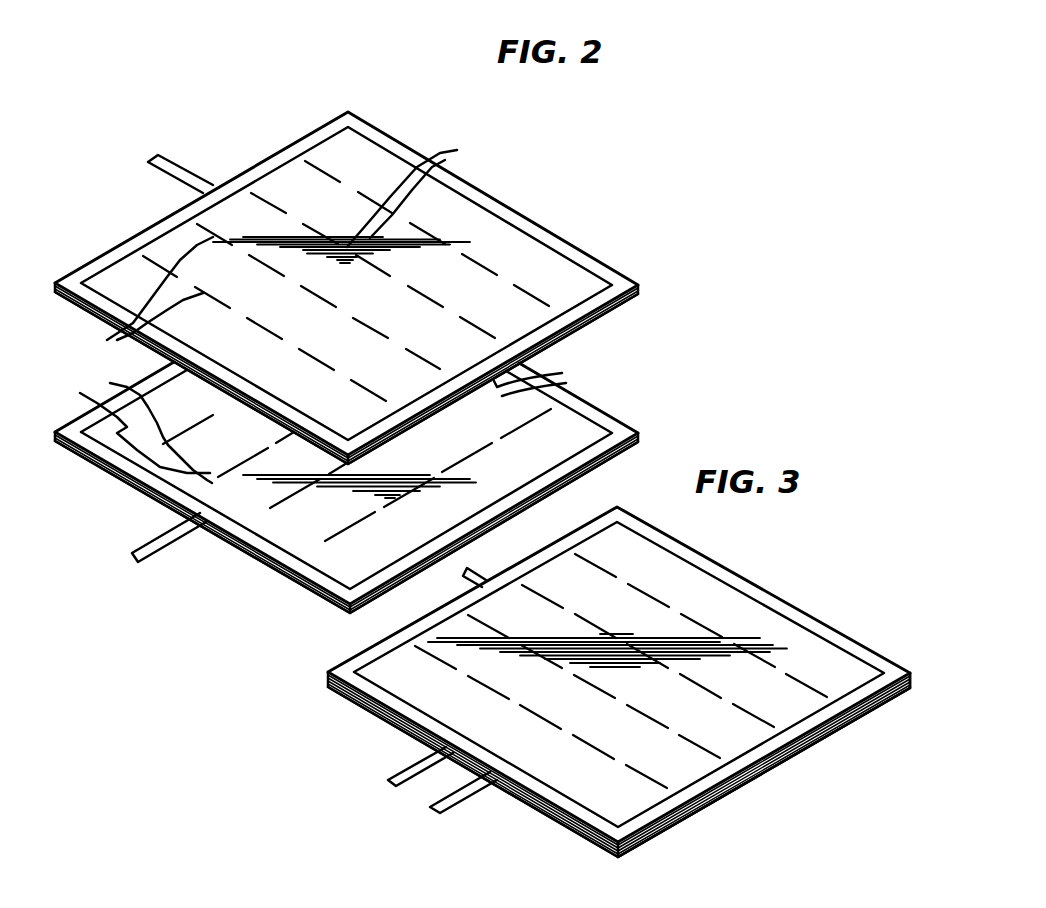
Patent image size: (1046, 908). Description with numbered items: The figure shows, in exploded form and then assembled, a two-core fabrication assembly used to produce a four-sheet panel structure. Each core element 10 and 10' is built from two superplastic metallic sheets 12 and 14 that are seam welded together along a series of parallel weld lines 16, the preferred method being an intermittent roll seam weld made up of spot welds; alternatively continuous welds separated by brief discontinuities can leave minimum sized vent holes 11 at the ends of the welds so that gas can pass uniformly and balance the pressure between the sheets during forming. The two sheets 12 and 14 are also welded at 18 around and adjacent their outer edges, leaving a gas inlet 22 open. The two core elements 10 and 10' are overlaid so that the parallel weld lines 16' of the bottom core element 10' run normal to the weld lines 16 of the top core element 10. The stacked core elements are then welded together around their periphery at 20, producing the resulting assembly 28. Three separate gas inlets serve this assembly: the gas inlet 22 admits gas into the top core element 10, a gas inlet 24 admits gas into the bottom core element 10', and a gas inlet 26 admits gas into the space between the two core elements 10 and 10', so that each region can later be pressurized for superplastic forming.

In FIG. 2, the core element 10 is at (346, 268).
In FIG. 3, the core element 10 is at (589, 682).
In FIG. 2, the core element 10' is at (346, 514).
In FIG. 3, the core element 10' is at (764, 765).
In FIG. 2, the vent holes 11 is at (190, 229).
In FIG. 2, the superplastic metallic sheet 12 is at (548, 263).
In FIG. 3, the superplastic metallic sheet 12 is at (393, 723).
In FIG. 2, the superplastic metallic sheet 14 is at (637, 293).
In FIG. 3, the superplastic metallic sheet 14 is at (420, 740).
In FIG. 2, the weld lines 16 is at (278, 250).
In FIG. 2, the weld lines 16' is at (334, 418).
In FIG. 2, the edge weld 18 is at (512, 215).
In FIG. 3, the peripheral weld 20 is at (767, 767).
In FIG. 2, the gas inlet 22 is at (208, 186).
In FIG. 3, the gas inlet 22 is at (477, 574).
In FIG. 2, the gas inlet 24 is at (133, 556).
In FIG. 3, the gas inlet 24 is at (433, 808).
In FIG. 3, the gas inlet 26 is at (387, 783).
In FIG. 3, the assembly 28 is at (748, 617).